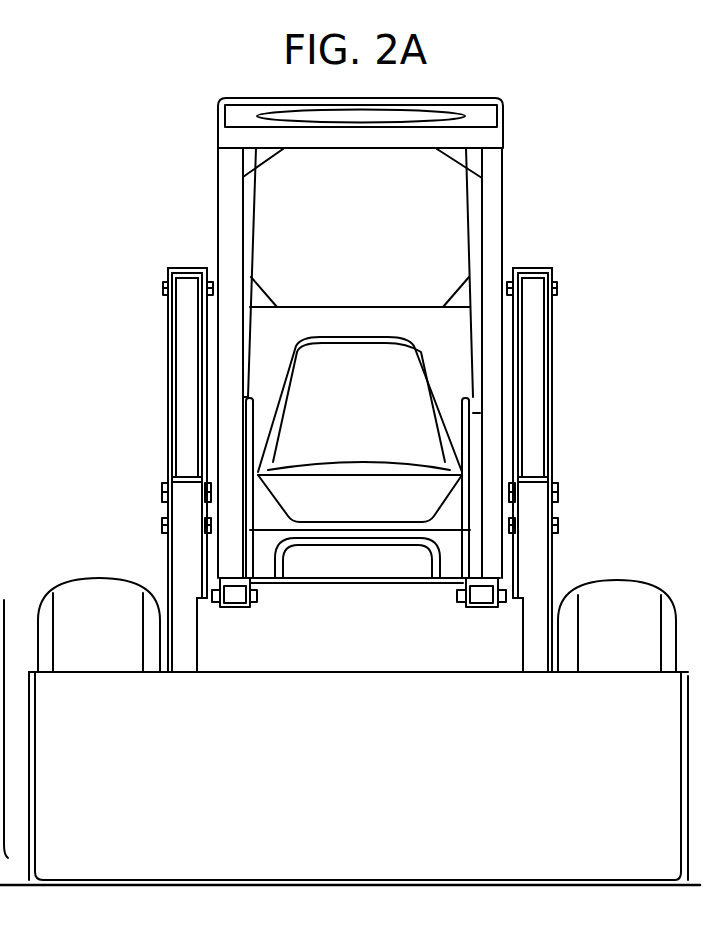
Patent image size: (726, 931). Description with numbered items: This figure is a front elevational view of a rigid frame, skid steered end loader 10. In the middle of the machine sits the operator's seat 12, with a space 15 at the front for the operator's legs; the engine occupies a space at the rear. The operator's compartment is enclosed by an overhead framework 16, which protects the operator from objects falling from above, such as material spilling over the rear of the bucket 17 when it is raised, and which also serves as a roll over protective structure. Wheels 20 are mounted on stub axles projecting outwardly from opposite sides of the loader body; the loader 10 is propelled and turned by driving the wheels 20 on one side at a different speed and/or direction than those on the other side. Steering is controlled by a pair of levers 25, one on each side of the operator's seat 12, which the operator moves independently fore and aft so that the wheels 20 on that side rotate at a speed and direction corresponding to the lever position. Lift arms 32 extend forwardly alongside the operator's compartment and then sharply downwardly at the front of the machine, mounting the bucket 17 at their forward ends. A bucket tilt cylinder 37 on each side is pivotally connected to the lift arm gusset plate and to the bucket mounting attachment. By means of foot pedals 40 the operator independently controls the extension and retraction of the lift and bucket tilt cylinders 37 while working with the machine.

The end loader 10 is at (523, 242).
The operator's seat 12 is at (375, 387).
The space 15 is at (363, 522).
The overhead framework 16 is at (235, 178).
The bucket 17 is at (370, 787).
The wheels 20 is at (87, 593).
The levers 25 is at (252, 398).
The lift arms 32 is at (188, 339).
The bucket tilt cylinder 37 is at (182, 515).
The foot pedals 40 is at (355, 560).